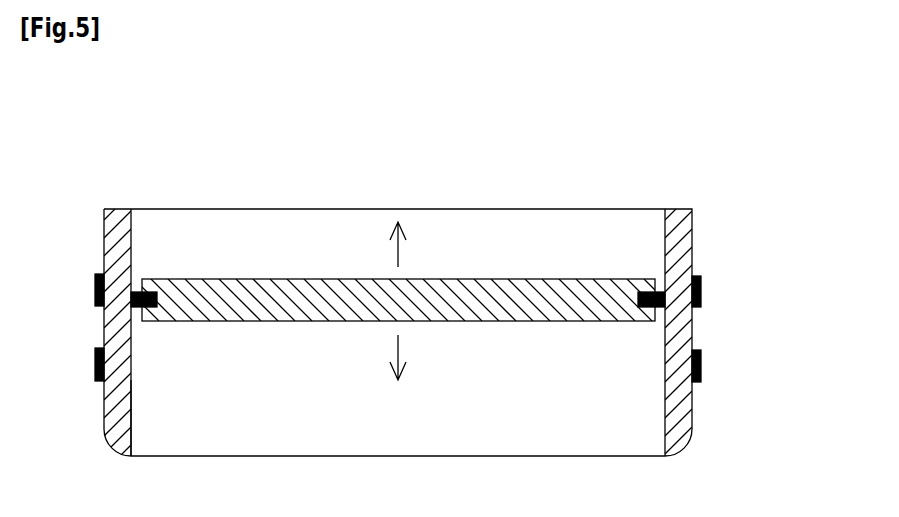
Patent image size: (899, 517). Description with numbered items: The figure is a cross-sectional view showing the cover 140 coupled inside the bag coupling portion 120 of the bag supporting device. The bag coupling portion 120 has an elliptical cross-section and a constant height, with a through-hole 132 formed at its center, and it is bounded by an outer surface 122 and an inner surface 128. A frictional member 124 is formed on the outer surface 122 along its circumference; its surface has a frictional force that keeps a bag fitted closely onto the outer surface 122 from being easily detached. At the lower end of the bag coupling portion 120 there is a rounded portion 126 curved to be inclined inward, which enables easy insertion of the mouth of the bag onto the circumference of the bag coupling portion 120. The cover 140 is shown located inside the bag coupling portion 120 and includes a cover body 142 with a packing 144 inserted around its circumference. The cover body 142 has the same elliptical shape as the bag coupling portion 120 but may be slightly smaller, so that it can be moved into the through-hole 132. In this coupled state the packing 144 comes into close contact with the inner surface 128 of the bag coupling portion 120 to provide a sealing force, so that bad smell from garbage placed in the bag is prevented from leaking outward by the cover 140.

The bag coupling portion 120 is at (683, 198).
The outer surface 122 is at (677, 262).
The frictional member 124 is at (701, 290).
The rounded portion 126 is at (113, 443).
The inner surface 128 is at (132, 402).
The through-hole 132 is at (425, 437).
The cover 140 is at (525, 268).
The cover body 142 is at (263, 288).
The packing 144 is at (141, 294).